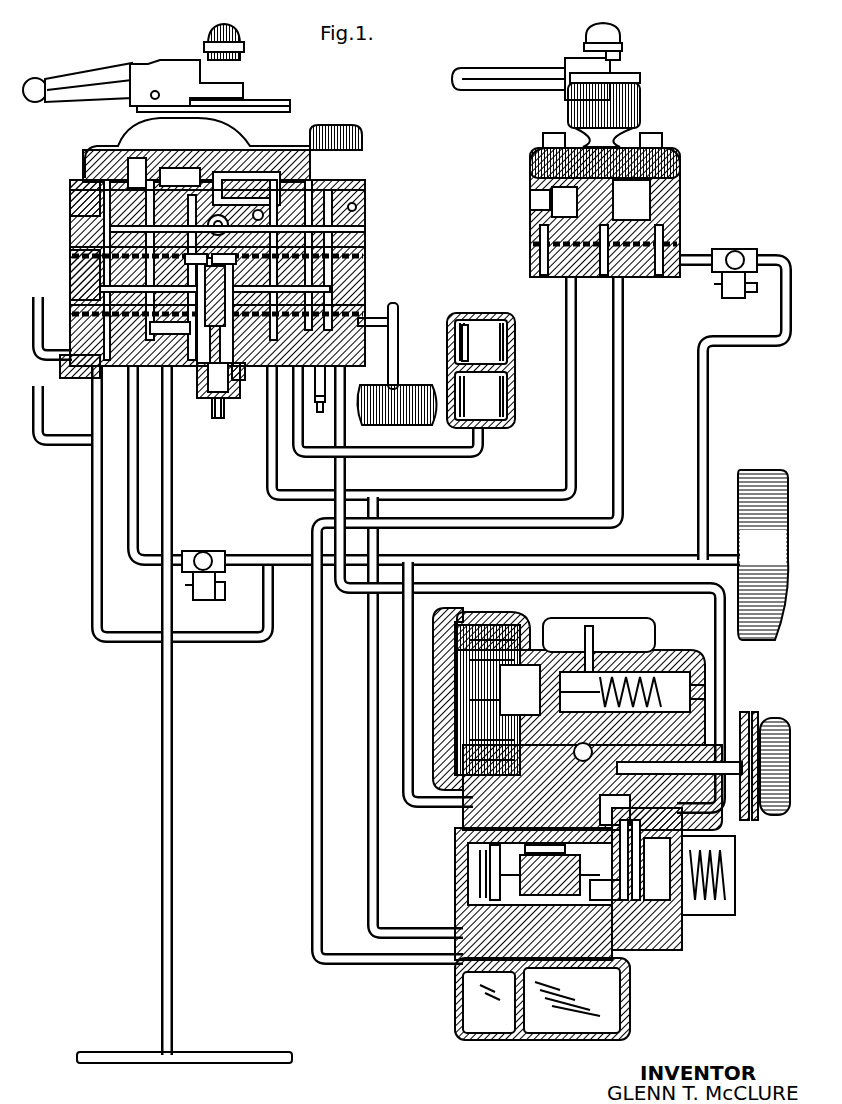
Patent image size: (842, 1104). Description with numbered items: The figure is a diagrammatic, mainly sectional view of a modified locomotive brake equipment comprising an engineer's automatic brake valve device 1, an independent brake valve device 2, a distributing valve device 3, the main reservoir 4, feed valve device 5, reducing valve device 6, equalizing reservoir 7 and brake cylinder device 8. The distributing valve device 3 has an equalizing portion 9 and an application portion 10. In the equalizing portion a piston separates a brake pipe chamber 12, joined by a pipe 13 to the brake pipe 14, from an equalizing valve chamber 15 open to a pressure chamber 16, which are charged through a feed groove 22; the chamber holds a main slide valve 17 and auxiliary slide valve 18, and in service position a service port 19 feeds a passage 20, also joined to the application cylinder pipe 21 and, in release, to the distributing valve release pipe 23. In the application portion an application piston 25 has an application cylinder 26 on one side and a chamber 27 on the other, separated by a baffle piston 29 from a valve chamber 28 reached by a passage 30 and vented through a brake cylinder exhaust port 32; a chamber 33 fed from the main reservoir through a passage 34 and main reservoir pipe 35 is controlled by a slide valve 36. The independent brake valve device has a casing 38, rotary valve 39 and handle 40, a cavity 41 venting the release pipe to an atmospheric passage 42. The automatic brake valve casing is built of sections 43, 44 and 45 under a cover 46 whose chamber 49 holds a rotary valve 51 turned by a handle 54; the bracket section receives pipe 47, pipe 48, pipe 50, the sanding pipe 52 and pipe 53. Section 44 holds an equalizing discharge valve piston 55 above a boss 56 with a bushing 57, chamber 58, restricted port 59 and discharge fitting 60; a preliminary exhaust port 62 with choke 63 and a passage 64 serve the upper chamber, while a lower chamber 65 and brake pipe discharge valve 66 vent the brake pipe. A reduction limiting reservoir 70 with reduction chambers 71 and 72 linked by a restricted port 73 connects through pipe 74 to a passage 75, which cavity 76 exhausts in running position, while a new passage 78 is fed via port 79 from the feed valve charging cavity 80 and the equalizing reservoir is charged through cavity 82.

The engineer's automatic brake valve device 1 is at (245, 97).
The independent brake valve device 2 is at (635, 100).
The distributing valve device 3 is at (635, 1017).
The main reservoir 4 is at (750, 497).
The feed valve device 5 is at (203, 556).
The reducing valve device 6 is at (732, 255).
The equalizing reservoir 7 is at (404, 397).
The brake cylinder device 8 is at (765, 800).
The equalizing portion 9 is at (673, 920).
The application portion 10 is at (488, 633).
The brake pipe chamber 12 is at (638, 940).
The pipe 13 is at (716, 783).
The brake pipe 14 is at (167, 451).
The equalizing valve chamber 15 is at (570, 847).
The pressure chamber 16 is at (570, 1022).
The main slide valve 17 is at (573, 888).
The auxiliary slide valve 18 is at (570, 865).
The service port 19 is at (497, 847).
The passage 20 is at (457, 913).
The application cylinder pipe 21 is at (277, 413).
The feed groove 22 is at (623, 807).
The distributing valve release pipe 23 is at (353, 952).
The application piston 25 is at (448, 657).
The application cylinder 26 is at (455, 685).
The chamber 27 is at (492, 723).
The valve chamber 28 is at (518, 648).
The baffle piston 29 is at (510, 685).
The passage 30 is at (607, 744).
The brake cylinder exhaust port 32 is at (582, 757).
The chamber 33 is at (638, 637).
The passage 34 is at (530, 847).
The main reservoir pipe 35 is at (563, 557).
The slide valve 36 is at (593, 637).
The casing 38 is at (533, 254).
The rotary valve 39 is at (533, 199).
The handle 40 is at (481, 78).
The cavity 41 is at (563, 210).
The passage 42 is at (556, 278).
The casing section 43 is at (64, 330).
The casing section 44 is at (68, 235).
The casing section 45 is at (72, 197).
The cover 46 is at (120, 150).
The pipe 47 is at (70, 262).
The pipe 48 is at (95, 450).
The rotary valve chamber 49 is at (82, 156).
The pipe 50 is at (135, 456).
The rotary valve 51 is at (190, 195).
The sanding pipe 52 is at (320, 410).
The pipe 53 is at (392, 350).
The handle 54 is at (62, 92).
The equalizing discharge valve piston 55 is at (330, 268).
The boss 56 is at (206, 400).
The bushing 57 is at (205, 361).
The chamber 58 is at (238, 380).
The restricted port 59 is at (213, 420).
The brake pipe discharge fitting 60 is at (220, 420).
The preliminary exhaust port 62 is at (196, 260).
The choke 63 is at (215, 185).
The passage 64 is at (224, 260).
The chamber 65 is at (170, 330).
The brake pipe discharge valve 66 is at (180, 367).
The reduction limiting reservoir 70 is at (515, 412).
The reduction chamber 71 is at (490, 390).
The reduction chamber 72 is at (498, 337).
The restricted port 73 is at (482, 362).
The pipe 74 is at (428, 452).
The passage 75 is at (320, 298).
The cavity 76 is at (280, 170).
The passage 78 is at (365, 205).
The port 79 is at (350, 162).
The feed valve charging cavity 80 is at (135, 175).
The cavity 82 is at (165, 180).